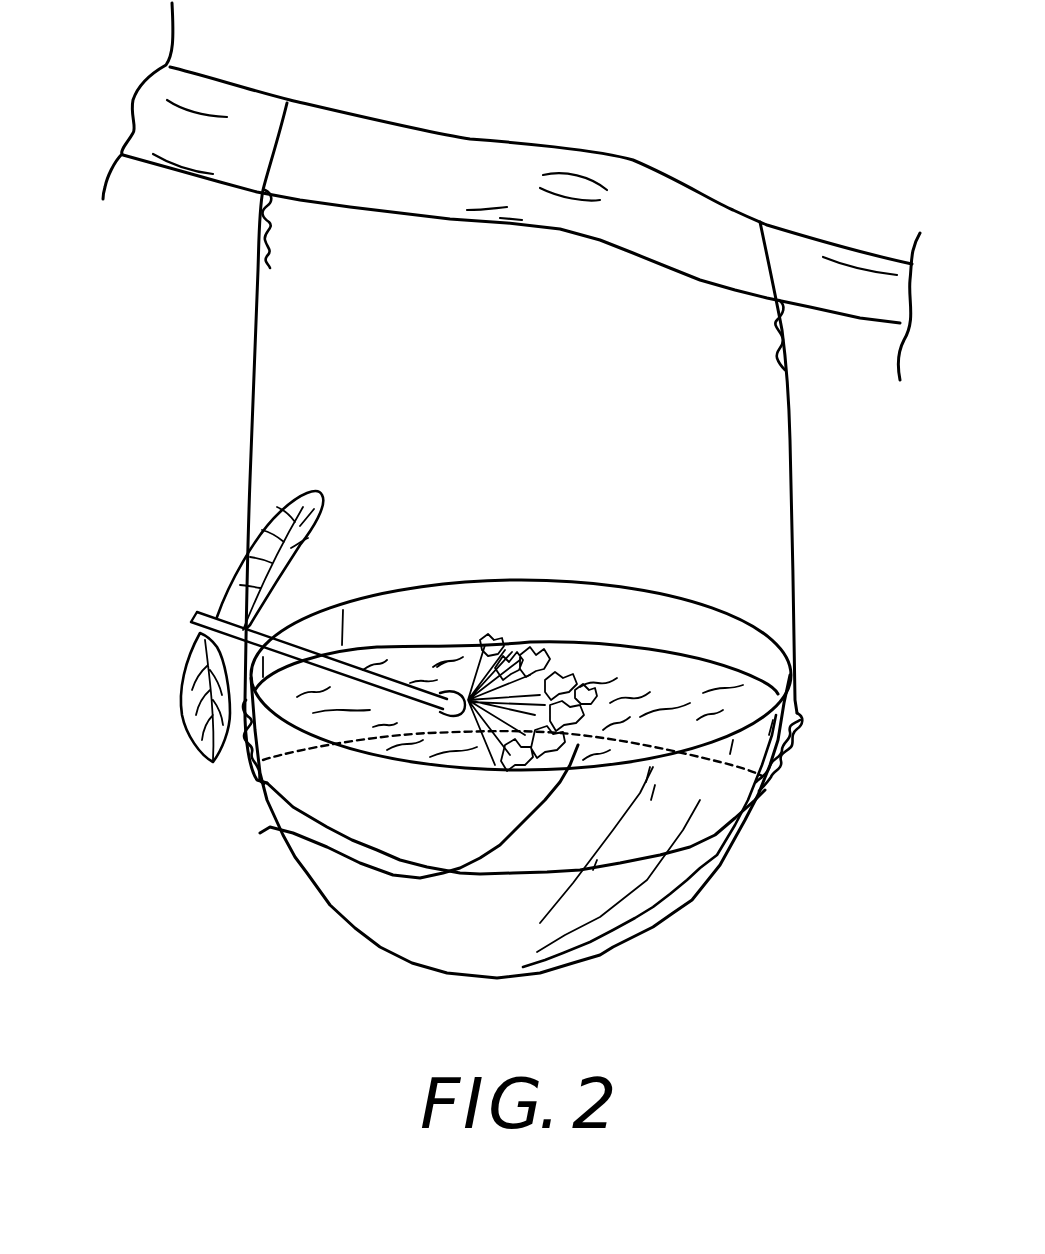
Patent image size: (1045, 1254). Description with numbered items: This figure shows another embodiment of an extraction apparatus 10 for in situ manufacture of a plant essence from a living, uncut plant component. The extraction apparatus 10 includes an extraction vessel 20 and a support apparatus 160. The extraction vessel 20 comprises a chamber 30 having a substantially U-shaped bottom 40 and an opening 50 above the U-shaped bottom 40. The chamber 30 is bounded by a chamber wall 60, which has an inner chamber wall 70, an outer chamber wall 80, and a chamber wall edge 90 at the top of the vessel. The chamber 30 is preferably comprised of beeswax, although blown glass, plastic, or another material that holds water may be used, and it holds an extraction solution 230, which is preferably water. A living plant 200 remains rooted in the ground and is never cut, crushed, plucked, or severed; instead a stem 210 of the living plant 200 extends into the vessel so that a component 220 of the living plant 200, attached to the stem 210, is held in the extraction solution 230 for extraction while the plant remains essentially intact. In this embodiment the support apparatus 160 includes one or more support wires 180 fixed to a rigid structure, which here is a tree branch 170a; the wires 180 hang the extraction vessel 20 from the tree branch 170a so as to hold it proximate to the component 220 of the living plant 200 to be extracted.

The extraction apparatus 10 is at (532, 671).
The extraction vessel 20 is at (527, 607).
The chamber 30 is at (582, 607).
The U-shaped bottom 40 is at (623, 947).
The opening 50 is at (642, 612).
The chamber wall 60 is at (725, 860).
The inner chamber wall 70 is at (610, 613).
The outer chamber wall 80 is at (690, 900).
The chamber wall edge 90 is at (750, 627).
The support apparatus 160 is at (483, 447).
The tree branch 170a is at (370, 137).
The support wires 180 is at (793, 448).
The living plant 200 is at (367, 682).
The stem of the living plant 210 is at (307, 653).
The component of the living plant 220 is at (492, 670).
The extraction solution 230 is at (648, 670).